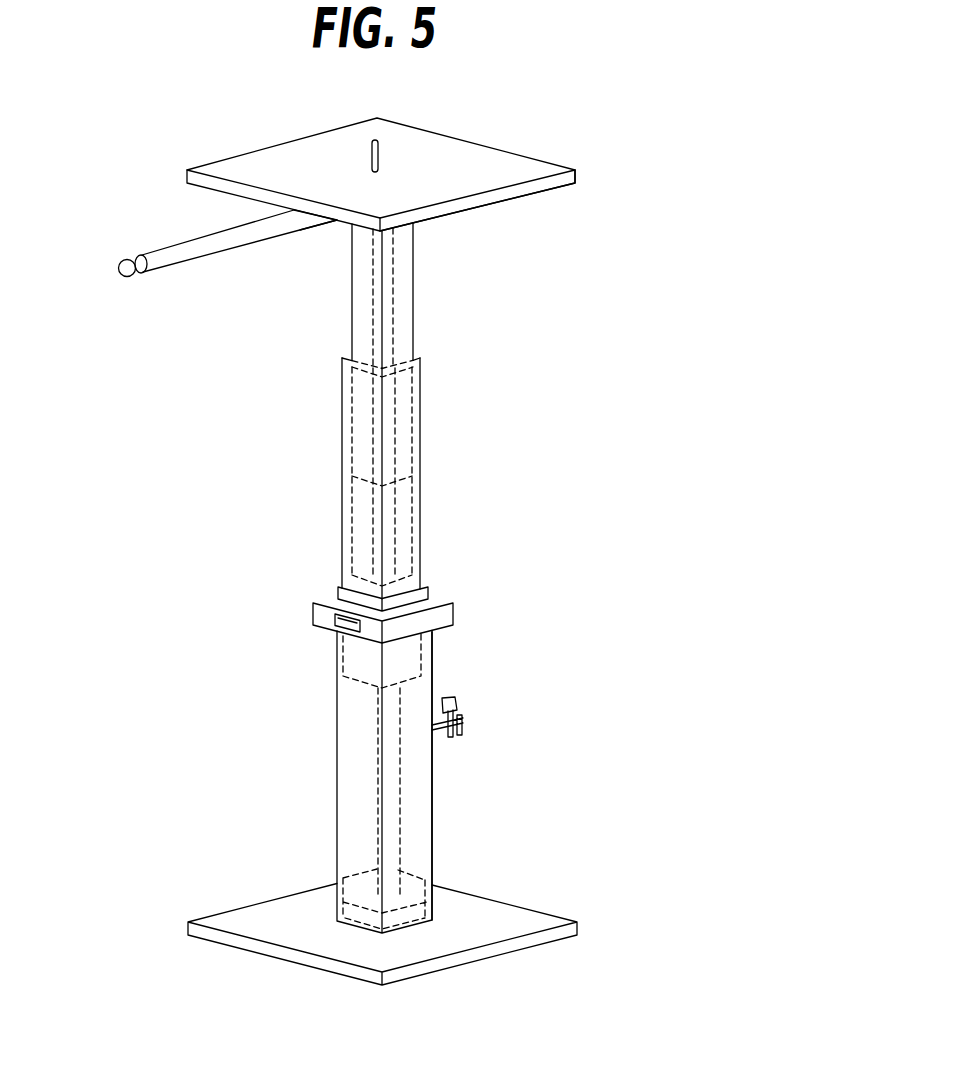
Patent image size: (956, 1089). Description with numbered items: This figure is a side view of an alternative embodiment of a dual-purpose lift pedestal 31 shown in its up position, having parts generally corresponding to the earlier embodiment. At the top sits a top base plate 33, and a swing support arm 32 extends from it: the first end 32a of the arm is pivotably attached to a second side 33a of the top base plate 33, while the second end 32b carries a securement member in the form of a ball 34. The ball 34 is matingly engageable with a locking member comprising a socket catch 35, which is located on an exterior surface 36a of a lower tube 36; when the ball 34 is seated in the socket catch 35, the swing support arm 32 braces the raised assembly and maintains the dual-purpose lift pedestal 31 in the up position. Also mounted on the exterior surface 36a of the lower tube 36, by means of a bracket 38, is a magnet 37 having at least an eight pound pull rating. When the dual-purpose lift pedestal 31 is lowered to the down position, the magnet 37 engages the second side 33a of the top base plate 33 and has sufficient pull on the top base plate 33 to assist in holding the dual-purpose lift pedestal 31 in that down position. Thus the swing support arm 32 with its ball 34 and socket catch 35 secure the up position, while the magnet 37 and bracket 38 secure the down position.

The dual-purpose lift pedestal 31 is at (605, 223).
The swing support arm 32 is at (210, 258).
The first end 32a is at (333, 222).
The second end 32b is at (142, 274).
The top base plate 33 is at (575, 170).
The second side 33a is at (482, 203).
The ball 34 is at (119, 266).
The socket catch 35 is at (335, 622).
The lower tube 36 is at (337, 732).
The exterior surface 36a is at (423, 832).
The magnet 37 is at (457, 700).
The bracket 38 is at (462, 722).